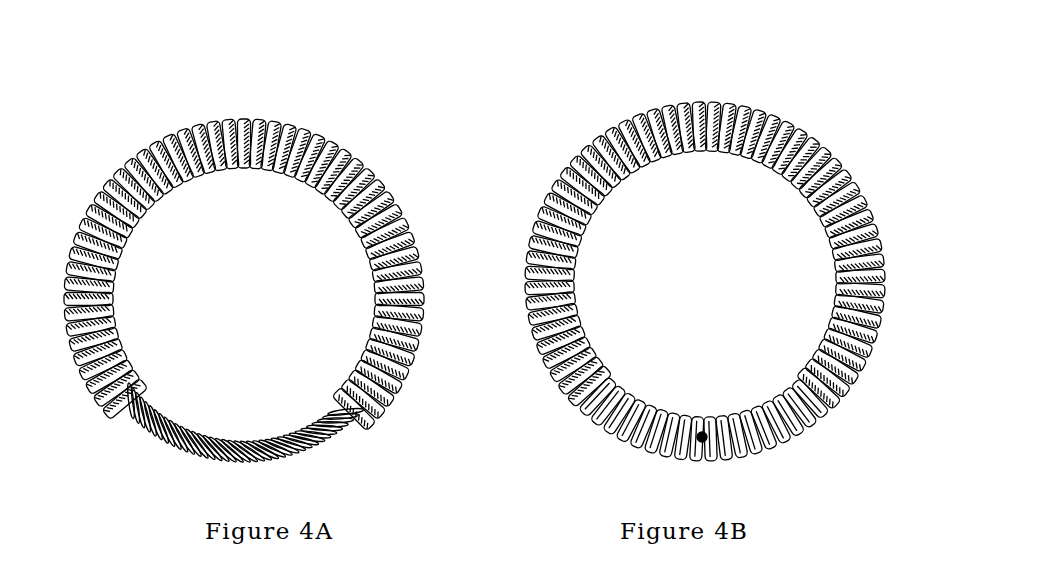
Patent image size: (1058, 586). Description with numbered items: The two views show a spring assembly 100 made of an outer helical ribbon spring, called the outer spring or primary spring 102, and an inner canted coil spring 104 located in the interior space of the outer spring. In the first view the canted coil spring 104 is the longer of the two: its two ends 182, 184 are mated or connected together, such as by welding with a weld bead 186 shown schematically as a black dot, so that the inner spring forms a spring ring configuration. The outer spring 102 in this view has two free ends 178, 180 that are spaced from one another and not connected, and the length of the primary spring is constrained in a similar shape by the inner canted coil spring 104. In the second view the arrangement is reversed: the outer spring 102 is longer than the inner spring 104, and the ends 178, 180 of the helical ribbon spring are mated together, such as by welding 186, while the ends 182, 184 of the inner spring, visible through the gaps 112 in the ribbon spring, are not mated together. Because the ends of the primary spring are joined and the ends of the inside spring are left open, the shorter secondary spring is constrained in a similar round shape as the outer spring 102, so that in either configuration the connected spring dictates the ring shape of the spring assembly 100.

In FIG. 4A, the spring assembly 100 is at (377, 108).
In FIG. 4B, the spring assembly 100 is at (568, 124).
In FIG. 4A, the outer spring 102 is at (148, 136).
In FIG. 4B, the outer spring 102 is at (556, 412).
In FIG. 4A, the canted coil spring 104 is at (208, 420).
In FIG. 4B, the canted coil spring 104 is at (806, 160).
In FIG. 4B, the gaps 112 is at (577, 405).
In FIG. 4A, the end of outer spring 178 is at (112, 412).
In FIG. 4B, the end of outer spring 178 is at (700, 447).
In FIG. 4A, the end of outer spring 180 is at (342, 395).
In FIG. 4B, the end of outer spring 180 is at (704, 414).
In FIG. 4A, the end of canted coil spring 182 is at (222, 462).
In FIG. 4B, the end of canted coil spring 182 is at (592, 395).
In FIG. 4A, the end of canted coil spring 184 is at (243, 449).
In FIG. 4B, the end of canted coil spring 184 is at (810, 378).
In FIG. 4A, the weld bead 186 is at (238, 458).
In FIG. 4B, the weld bead 186 is at (700, 430).